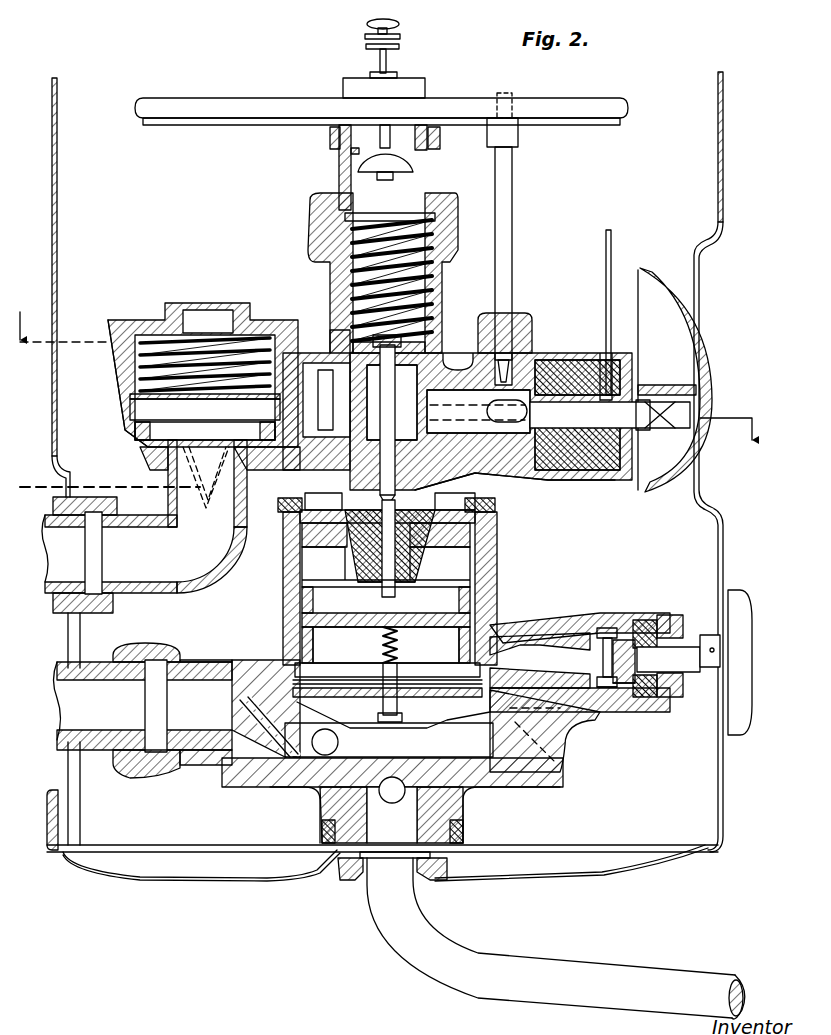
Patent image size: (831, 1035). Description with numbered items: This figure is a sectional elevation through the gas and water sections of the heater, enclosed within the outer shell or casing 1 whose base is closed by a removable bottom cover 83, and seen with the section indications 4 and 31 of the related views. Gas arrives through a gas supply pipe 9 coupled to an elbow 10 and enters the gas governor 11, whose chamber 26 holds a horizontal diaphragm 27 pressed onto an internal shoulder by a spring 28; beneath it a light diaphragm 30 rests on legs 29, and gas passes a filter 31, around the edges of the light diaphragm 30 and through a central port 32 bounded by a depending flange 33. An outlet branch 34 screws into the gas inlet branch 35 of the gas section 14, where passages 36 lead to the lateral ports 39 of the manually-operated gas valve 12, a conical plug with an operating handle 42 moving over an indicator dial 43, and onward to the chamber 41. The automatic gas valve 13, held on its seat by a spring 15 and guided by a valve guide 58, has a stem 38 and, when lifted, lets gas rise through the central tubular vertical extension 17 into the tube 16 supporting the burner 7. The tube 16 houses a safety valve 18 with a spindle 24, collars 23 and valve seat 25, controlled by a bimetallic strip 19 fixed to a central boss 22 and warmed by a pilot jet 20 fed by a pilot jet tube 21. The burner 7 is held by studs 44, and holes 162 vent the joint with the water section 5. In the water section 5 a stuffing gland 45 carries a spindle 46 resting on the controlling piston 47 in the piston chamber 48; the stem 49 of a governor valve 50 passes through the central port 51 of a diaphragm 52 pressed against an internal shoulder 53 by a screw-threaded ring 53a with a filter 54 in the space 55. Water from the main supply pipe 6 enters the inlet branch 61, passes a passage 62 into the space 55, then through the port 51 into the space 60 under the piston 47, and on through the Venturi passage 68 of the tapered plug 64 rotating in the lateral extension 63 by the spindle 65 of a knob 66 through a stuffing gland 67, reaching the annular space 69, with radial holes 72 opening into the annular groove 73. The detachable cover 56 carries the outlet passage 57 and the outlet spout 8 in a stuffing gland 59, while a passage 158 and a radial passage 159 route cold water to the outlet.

The housing 1 is at (52, 178).
The section line 4 is at (381, 380).
The water section 5 is at (285, 607).
The main supply pipe 6 is at (55, 750).
The gas burner 7 is at (618, 104).
The outlet spout 8 is at (560, 968).
The gas supply pipe 9 is at (62, 548).
The elbow 10 is at (163, 584).
The gas governor 11 is at (125, 437).
The manually-operated gas valve 12 is at (548, 355).
The automatic gas valve 13 is at (353, 345).
The gas section 14 is at (480, 468).
The spring 15 is at (432, 272).
The tube 16 is at (338, 178).
The central tubular vertical extension 17 is at (330, 262).
The safety valve 18 is at (415, 173).
The bimetallic strip 19 is at (398, 74).
The pilot jet 20 is at (512, 100).
The pilot jet tube 21 is at (512, 200).
The central boss 22 is at (360, 94).
The collars 23 is at (382, 40).
The spindle 24 is at (378, 136).
The valve seat 25 is at (350, 153).
The chamber 26 is at (130, 372).
The horizontal diaphragm 27 is at (128, 397).
The spring 28 is at (145, 335).
The legs 29 is at (140, 462).
The light diaphragm 30 is at (150, 455).
The filter 31 is at (101, 486).
The central port 32 is at (205, 410).
The depending flange 33 is at (150, 430).
The outlet branch 34 is at (300, 447).
The gas inlet branch 35 is at (318, 352).
The passages 36 is at (455, 350).
The stem 38 is at (394, 402).
The lateral ports 39 is at (478, 411).
The chamber 41 is at (373, 426).
The operating handle 42 is at (675, 298).
The indicator dial 43 is at (611, 245).
The studs 44 is at (497, 510).
The stuffing gland 45 is at (415, 553).
The spindle 46 is at (412, 570).
The controlling piston 47 is at (420, 582).
The piston chamber 48 is at (320, 572).
The stem 49 is at (400, 660).
The governor valve 50 is at (402, 716).
The central port 51 is at (383, 700).
The diaphragm 52 is at (340, 700).
The internal shoulder 53 is at (292, 694).
The screw-threaded ring 53a is at (560, 785).
The filter 54 is at (432, 728).
The space 55 is at (389, 741).
The detachable cover 56 is at (250, 790).
The outlet passage 57 is at (420, 805).
The valve guide 58 is at (475, 545).
The stuffing gland 59 is at (343, 880).
The space 60 is at (315, 660).
The inlet branch 61 is at (185, 662).
The passage 62 is at (215, 766).
The lateral extension 63 is at (605, 625).
The tapered plug 64 is at (625, 640).
The spindle 65 is at (700, 665).
The knob 66 is at (735, 598).
The stuffing gland 67 is at (672, 615).
The Venturi passage 68 is at (603, 690).
The annular space 69 is at (622, 690).
The radial holes 72 is at (545, 656).
The annular groove 73 is at (597, 628).
The removable bottom cover 83 is at (140, 878).
The passage 158 is at (312, 797).
The radial passage 159 is at (405, 790).
The holes 162 is at (390, 501).